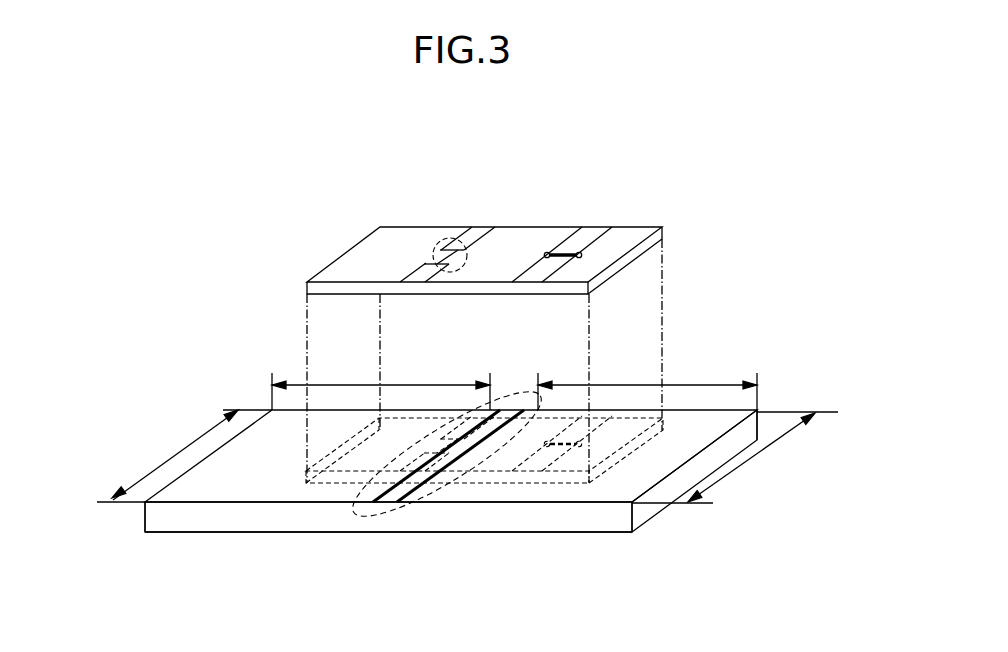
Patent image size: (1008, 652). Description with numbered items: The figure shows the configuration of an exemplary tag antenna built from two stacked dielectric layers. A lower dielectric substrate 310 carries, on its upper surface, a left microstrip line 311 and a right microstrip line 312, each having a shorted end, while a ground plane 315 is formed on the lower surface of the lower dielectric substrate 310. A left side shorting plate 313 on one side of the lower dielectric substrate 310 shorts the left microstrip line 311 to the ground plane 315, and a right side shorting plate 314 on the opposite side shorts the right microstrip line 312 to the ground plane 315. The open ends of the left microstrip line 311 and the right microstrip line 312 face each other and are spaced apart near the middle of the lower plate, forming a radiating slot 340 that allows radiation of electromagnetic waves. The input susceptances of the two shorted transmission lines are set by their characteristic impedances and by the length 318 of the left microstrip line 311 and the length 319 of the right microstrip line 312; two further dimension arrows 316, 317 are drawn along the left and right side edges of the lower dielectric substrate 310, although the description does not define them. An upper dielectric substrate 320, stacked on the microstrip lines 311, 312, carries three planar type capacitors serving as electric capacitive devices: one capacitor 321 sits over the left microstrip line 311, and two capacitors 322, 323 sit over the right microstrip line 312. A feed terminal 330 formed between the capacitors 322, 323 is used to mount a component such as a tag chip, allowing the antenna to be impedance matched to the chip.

The lower dielectric substrate 310 is at (430, 453).
The left microstrip line 311 is at (250, 455).
The right microstrip line 312 is at (682, 430).
The left side shorting plate 313 is at (145, 517).
The right side shorting plate 314 is at (647, 510).
The ground plane 315 is at (187, 533).
The depth direction of base substrate 316 is at (162, 465).
The depth direction of base substrate 317 is at (753, 460).
The length of the left microstrip line 318 is at (398, 385).
The length of the right microstrip line 319 is at (642, 385).
The upper dielectric substrate 320 is at (520, 208).
The first electric capacitive device 321 is at (412, 238).
The second electric capacitive device 322 is at (522, 248).
The third electric capacitive device 323 is at (625, 243).
The feed terminal 330 is at (567, 252).
The radiating slot 340 is at (392, 510).